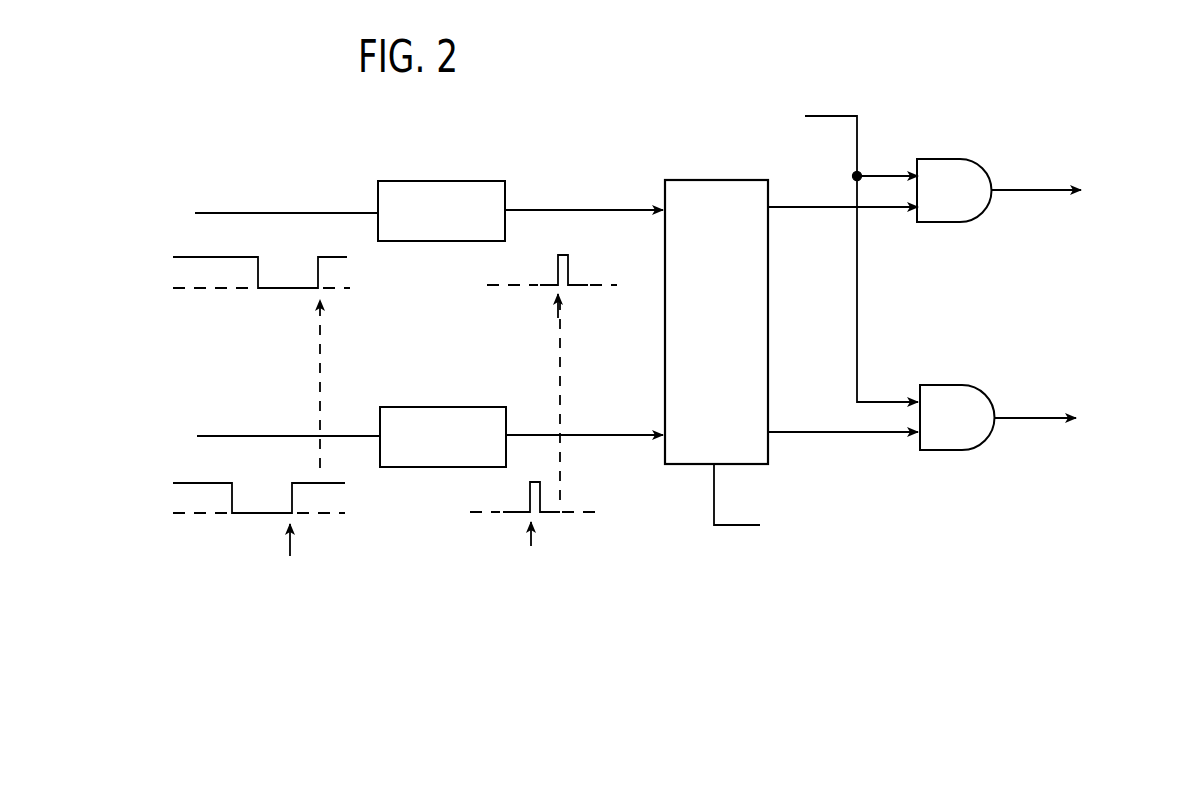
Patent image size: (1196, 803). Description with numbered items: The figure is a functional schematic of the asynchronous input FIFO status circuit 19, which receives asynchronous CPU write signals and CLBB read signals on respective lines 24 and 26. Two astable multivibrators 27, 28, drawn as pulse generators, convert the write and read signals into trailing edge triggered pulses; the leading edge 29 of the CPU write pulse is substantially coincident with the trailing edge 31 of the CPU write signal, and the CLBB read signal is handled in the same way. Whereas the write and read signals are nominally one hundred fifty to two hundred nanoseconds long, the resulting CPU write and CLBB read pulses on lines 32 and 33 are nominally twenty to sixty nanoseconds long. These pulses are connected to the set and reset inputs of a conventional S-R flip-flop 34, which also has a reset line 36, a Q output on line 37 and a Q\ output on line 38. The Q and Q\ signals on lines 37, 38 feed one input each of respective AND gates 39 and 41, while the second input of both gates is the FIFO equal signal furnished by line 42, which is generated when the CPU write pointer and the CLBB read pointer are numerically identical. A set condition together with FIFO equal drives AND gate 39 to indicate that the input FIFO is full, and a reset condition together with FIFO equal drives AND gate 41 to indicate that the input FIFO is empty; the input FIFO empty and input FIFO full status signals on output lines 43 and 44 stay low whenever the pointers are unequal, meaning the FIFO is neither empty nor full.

The input FIFO status circuit 19 is at (640, 542).
The line 24 is at (270, 212).
The line 26 is at (268, 434).
The astable multivibrator 27 is at (412, 182).
The astable multivibrator 28 is at (425, 407).
The leading edge 29 is at (556, 262).
The trailing edge 31 is at (318, 258).
The line 32 is at (580, 210).
The line 33 is at (613, 432).
The S-R flip-flop 34 is at (666, 182).
The reset line 36 is at (735, 528).
The line 37 is at (828, 430).
The line 38 is at (797, 208).
The AND gate 39 is at (937, 390).
The AND gate 41 is at (945, 170).
The line 42 is at (843, 115).
The output line 43 is at (1010, 188).
The output line 44 is at (1015, 416).